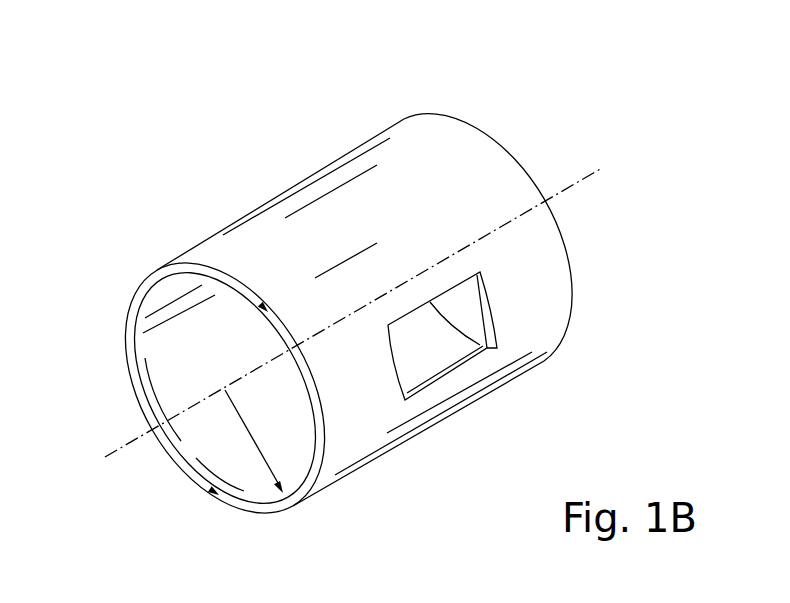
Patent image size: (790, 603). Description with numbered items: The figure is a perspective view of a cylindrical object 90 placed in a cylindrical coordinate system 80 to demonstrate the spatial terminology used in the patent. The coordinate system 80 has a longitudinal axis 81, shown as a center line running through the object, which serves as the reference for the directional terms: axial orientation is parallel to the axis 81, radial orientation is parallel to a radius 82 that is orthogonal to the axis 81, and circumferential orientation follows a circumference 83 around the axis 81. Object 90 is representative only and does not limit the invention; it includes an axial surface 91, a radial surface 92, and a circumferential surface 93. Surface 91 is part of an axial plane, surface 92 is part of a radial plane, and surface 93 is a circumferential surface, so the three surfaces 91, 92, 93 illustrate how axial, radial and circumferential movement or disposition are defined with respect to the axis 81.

The cylindrical coordinate system 80 is at (518, 127).
The longitudinal axis 81 is at (117, 450).
The radius 82 is at (260, 445).
The circumference 83 is at (132, 287).
The cylindrical object 90 is at (387, 110).
The axial surface 91 is at (466, 360).
The radial surface 92 is at (240, 504).
The circumferential surface 93 is at (328, 210).